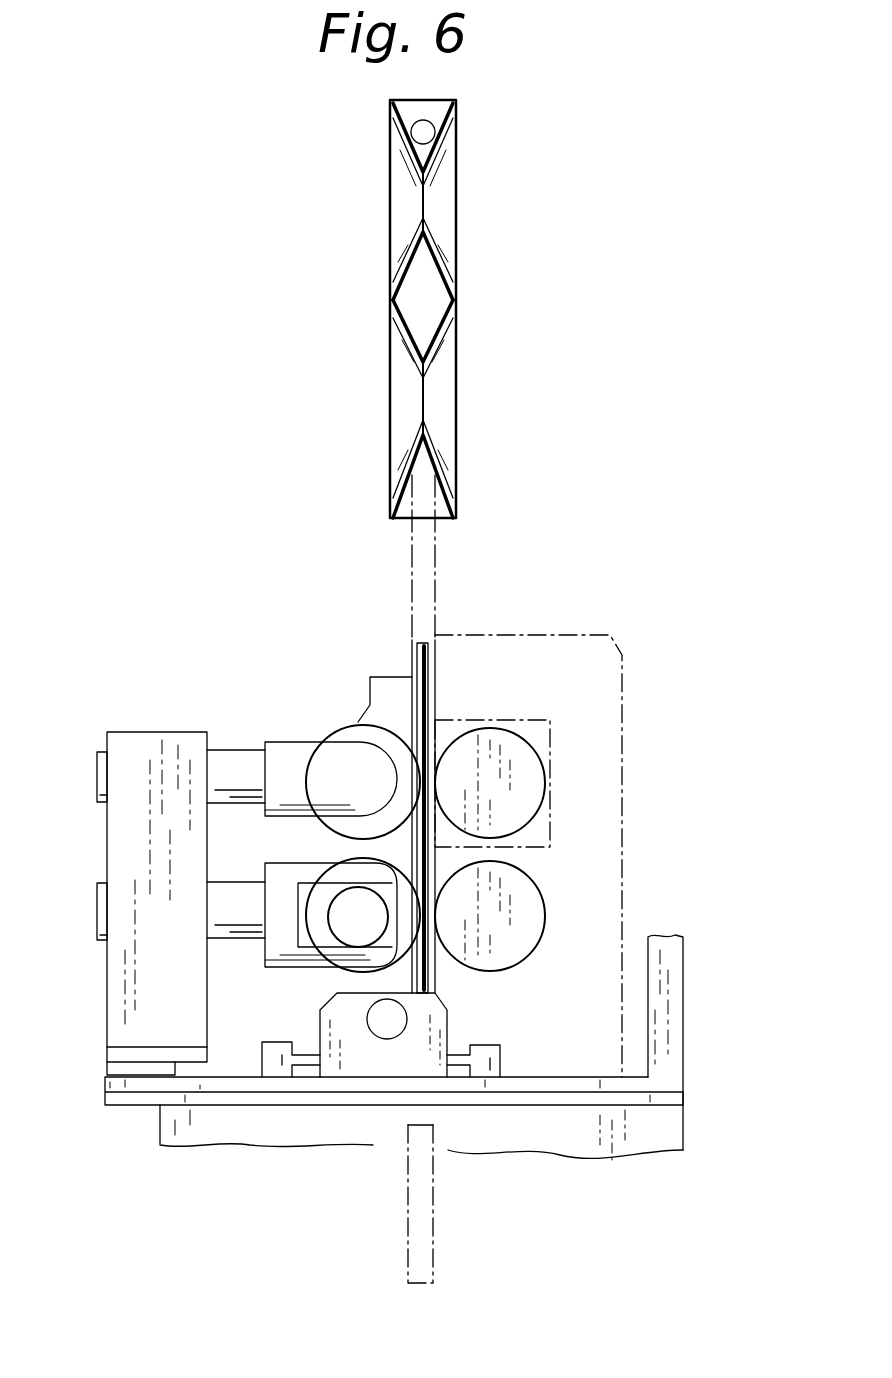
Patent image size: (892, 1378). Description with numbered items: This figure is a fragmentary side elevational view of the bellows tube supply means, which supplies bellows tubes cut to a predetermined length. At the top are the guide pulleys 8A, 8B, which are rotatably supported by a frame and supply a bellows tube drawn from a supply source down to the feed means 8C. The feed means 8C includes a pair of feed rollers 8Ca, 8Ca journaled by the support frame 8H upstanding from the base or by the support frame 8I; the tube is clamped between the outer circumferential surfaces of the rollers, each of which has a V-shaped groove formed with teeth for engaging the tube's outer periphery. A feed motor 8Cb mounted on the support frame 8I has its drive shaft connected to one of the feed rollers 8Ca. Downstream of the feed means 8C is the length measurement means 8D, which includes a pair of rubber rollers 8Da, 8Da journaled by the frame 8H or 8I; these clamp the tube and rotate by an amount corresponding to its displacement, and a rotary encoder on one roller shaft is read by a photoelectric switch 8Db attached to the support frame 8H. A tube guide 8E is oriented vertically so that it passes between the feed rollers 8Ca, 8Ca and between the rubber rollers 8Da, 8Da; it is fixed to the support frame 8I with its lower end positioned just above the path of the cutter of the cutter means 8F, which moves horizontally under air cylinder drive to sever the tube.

The guide pulley 8A is at (456, 183).
The guide pulley 8B is at (456, 398).
The feed means 8C is at (272, 737).
The feed roller 8Ca is at (330, 738).
The feed motor 8Cb is at (550, 752).
The length measurement means 8D is at (268, 973).
The rubber roller 8Da is at (352, 862).
The photoelectric switch 8Db is at (336, 938).
The tube guide 8E is at (435, 677).
The cutter means 8F is at (447, 1021).
The support frame 8H is at (106, 808).
The support frame 8I is at (622, 795).